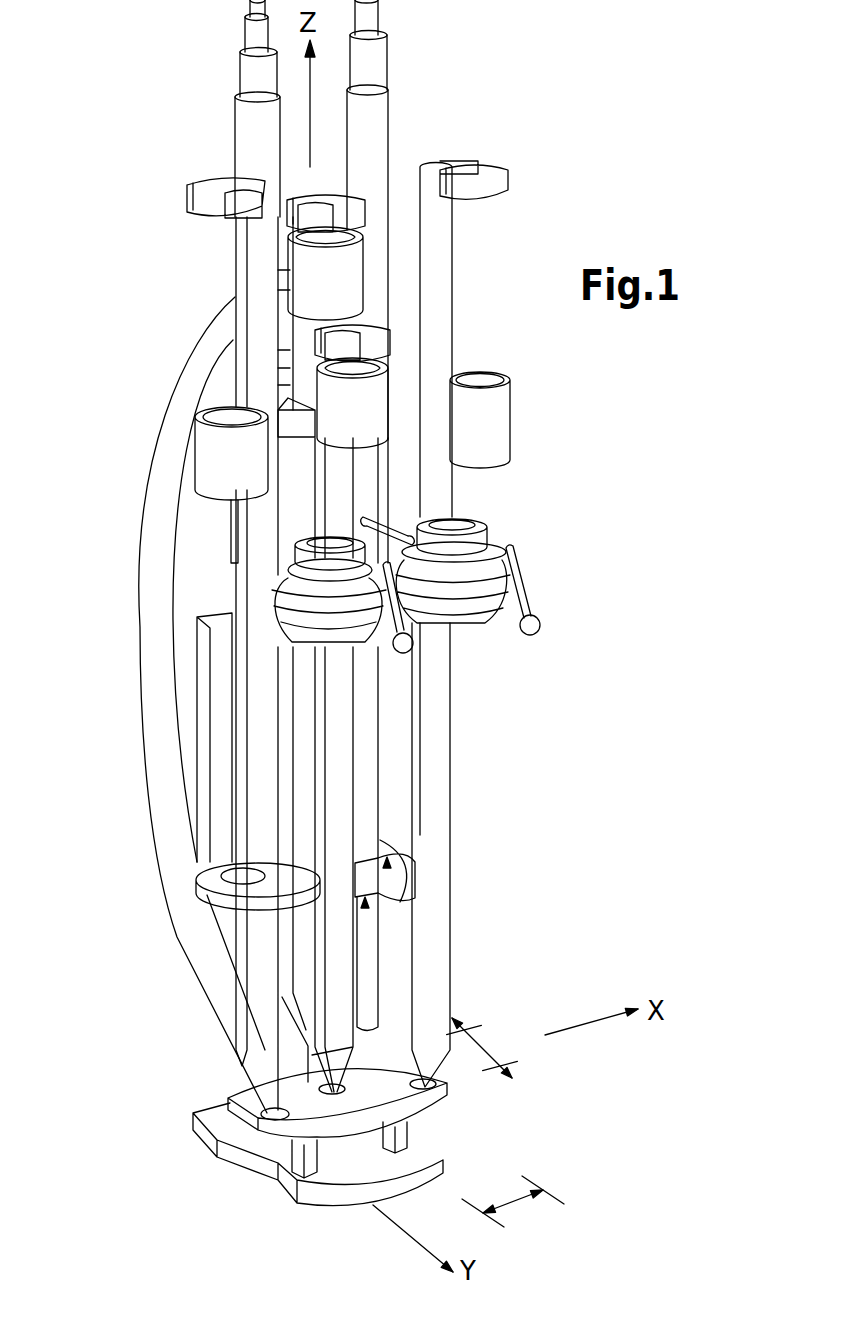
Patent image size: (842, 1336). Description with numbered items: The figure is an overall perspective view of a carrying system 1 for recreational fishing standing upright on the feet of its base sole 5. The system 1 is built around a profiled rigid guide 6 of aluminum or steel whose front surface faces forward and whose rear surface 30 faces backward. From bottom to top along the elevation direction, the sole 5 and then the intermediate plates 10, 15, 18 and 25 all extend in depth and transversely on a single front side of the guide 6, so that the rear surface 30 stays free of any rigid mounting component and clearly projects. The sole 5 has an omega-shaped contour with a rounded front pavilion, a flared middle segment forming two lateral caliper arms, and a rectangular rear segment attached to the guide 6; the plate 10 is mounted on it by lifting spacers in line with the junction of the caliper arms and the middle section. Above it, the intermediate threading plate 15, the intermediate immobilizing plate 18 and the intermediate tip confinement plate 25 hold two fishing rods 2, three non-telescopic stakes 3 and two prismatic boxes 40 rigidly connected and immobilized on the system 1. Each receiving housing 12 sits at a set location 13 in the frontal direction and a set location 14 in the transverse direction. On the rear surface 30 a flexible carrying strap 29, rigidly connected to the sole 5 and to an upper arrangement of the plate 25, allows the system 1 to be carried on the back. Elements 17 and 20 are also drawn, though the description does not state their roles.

The carrying system 1 is at (115, 241).
The fishing rod 2 is at (250, 137).
The stake 3 is at (263, 1052).
The base sole 5 is at (192, 1153).
The profiled rigid guide 6 is at (260, 1082).
The rear surface 30 is at (169, 652).
The intermediate plate 10 is at (430, 1114).
The receiving housing 12 is at (410, 1082).
The set location in the frontal direction 13 is at (513, 1207).
The set location in the transverse direction 14 is at (487, 1048).
The intermediate threading plate 15 is at (400, 850).
The holding element 17 is at (222, 868).
The intermediate immobilizing plate 18 is at (386, 556).
The knob 20 is at (262, 550).
The intermediate tip confinement plate 25 is at (297, 423).
The carrying strap 29 is at (157, 737).
The box 40 is at (230, 397).